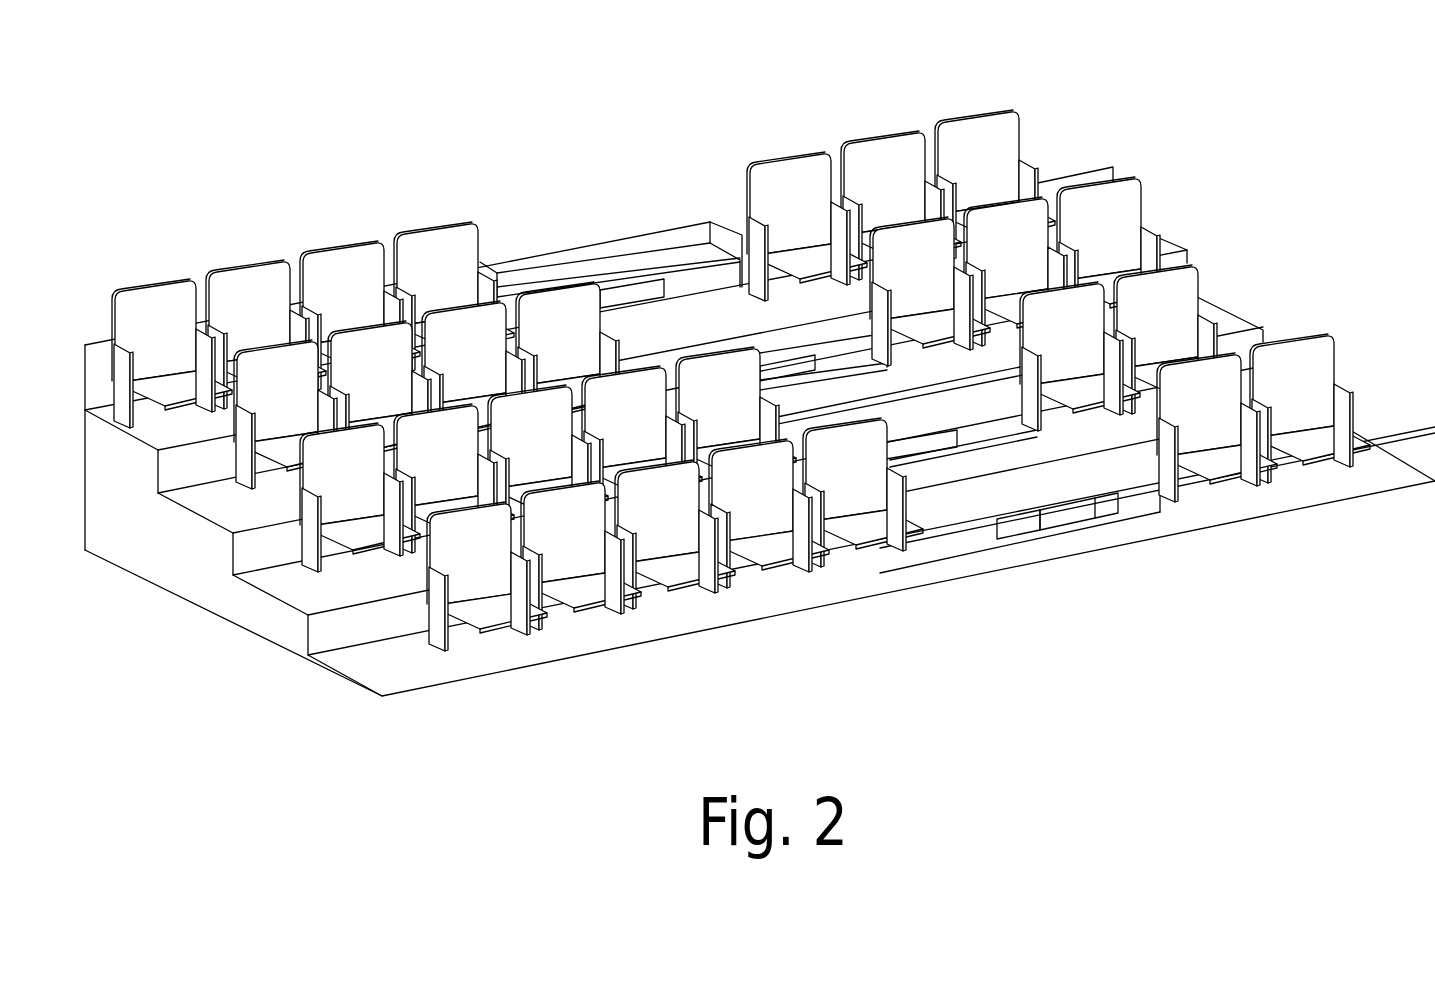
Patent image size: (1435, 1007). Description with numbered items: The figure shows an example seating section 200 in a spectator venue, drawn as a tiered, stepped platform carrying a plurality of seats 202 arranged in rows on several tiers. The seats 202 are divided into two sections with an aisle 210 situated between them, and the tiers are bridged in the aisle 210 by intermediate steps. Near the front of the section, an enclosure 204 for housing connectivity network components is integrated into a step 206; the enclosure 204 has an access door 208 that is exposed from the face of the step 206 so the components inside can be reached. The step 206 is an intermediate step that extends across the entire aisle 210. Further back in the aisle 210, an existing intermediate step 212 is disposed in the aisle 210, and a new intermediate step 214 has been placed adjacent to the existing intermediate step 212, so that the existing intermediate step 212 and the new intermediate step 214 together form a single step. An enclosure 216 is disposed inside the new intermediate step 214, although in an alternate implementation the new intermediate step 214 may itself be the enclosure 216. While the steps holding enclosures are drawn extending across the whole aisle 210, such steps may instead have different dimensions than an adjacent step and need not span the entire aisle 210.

The seating section 200 is at (760, 474).
The seats 202 is at (741, 369).
The enclosure 204 is at (1138, 529).
The step 206 is at (1097, 476).
The access door 208 is at (1064, 550).
The aisle 210 is at (622, 177).
The existing intermediate step 212 is at (577, 273).
The new intermediate step 214 is at (618, 278).
The enclosure 216 is at (653, 288).